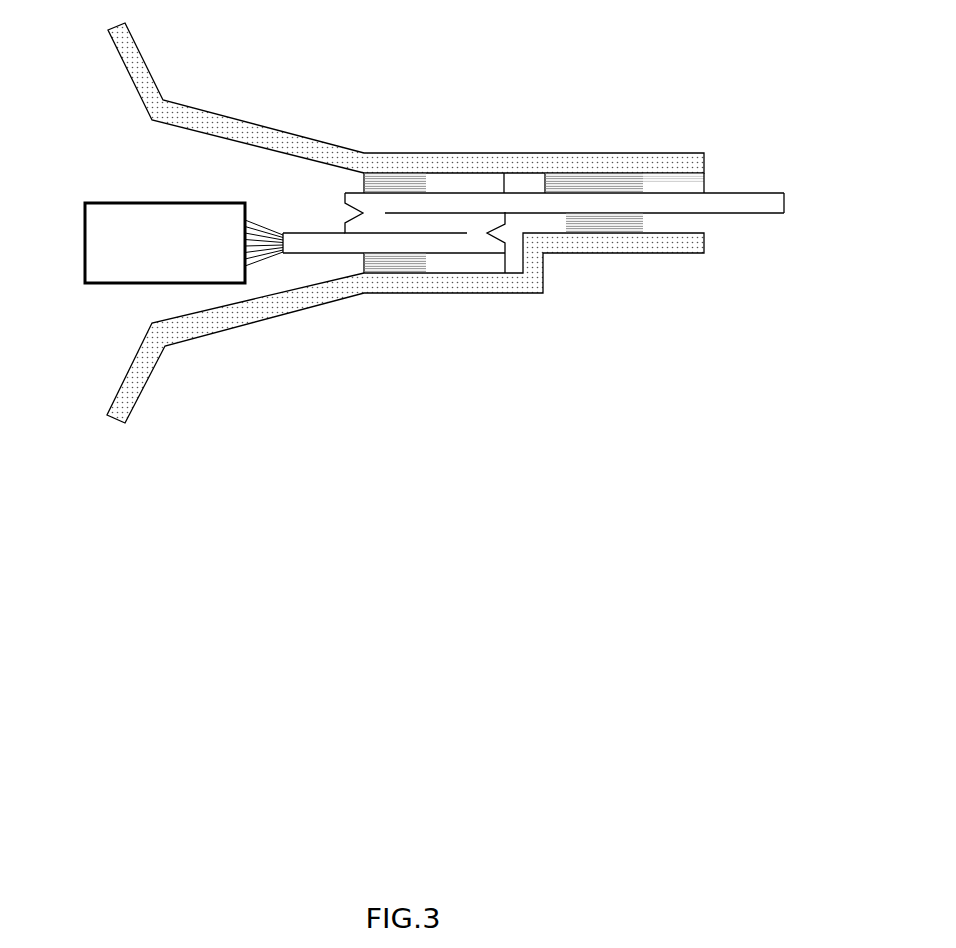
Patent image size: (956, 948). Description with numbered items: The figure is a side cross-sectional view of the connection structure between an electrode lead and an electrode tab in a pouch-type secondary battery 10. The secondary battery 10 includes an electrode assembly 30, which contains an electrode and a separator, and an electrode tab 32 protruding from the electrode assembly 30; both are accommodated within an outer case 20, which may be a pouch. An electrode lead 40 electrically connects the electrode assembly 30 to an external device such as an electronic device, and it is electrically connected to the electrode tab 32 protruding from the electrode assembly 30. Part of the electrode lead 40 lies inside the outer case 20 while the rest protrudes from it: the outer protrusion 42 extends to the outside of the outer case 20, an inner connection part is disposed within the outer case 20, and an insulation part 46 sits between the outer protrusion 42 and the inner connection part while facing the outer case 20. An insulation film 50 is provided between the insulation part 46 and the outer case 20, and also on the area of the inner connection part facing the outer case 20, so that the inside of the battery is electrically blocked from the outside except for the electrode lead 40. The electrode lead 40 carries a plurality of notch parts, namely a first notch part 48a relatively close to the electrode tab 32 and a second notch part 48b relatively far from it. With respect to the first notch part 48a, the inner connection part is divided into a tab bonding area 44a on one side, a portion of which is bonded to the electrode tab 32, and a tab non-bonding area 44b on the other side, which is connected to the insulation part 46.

The secondary battery 10 is at (524, 88).
The outer case 20 is at (128, 80).
The electrode assembly 30 is at (85, 241).
The electrode tab 32 is at (272, 265).
The electrode lead 40 is at (779, 132).
The outer protrusion 42 is at (784, 203).
The tab bonding area 44a is at (325, 255).
The tab non-bonding area 44b is at (412, 222).
The insulation part 46 is at (664, 203).
The first notch part 48a is at (505, 240).
The second notch part 48b is at (346, 210).
The insulation film 50 is at (465, 183).